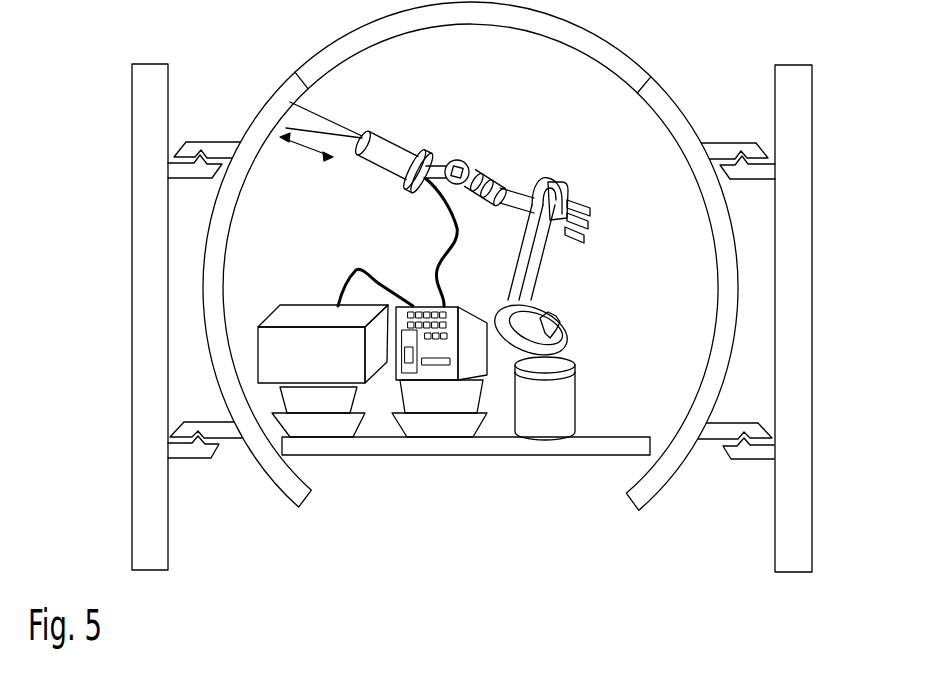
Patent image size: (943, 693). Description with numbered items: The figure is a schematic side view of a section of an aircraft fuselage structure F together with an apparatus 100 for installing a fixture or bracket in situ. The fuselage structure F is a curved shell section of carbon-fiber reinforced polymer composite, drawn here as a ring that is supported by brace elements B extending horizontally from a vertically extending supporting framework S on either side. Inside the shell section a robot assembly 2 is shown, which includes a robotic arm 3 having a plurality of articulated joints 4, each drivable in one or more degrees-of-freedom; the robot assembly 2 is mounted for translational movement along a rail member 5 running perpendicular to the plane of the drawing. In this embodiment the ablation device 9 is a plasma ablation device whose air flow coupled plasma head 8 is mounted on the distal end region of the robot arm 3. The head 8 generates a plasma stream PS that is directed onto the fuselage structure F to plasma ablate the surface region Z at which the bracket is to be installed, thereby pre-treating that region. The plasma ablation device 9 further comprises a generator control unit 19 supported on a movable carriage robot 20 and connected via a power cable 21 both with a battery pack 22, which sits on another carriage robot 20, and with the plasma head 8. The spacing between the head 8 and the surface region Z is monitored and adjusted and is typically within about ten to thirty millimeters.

The robot assembly 2 is at (575, 309).
The robotic arm 3 is at (542, 251).
The articulated joints 4 is at (459, 163).
The rail member 5 is at (618, 436).
The plasma head 8 is at (404, 122).
The plasma ablation device 9 is at (316, 219).
The generator control unit 19 is at (461, 296).
The carriage robot 20 is at (333, 452).
The power cable 21 is at (452, 236).
The battery pack 22 is at (293, 316).
The apparatus 100 is at (522, 123).
The brace elements B is at (190, 141).
The fuselage structure F is at (220, 218).
The supporting framework S is at (150, 318).
The surface region Z is at (286, 70).
The plasma stream PS is at (338, 132).